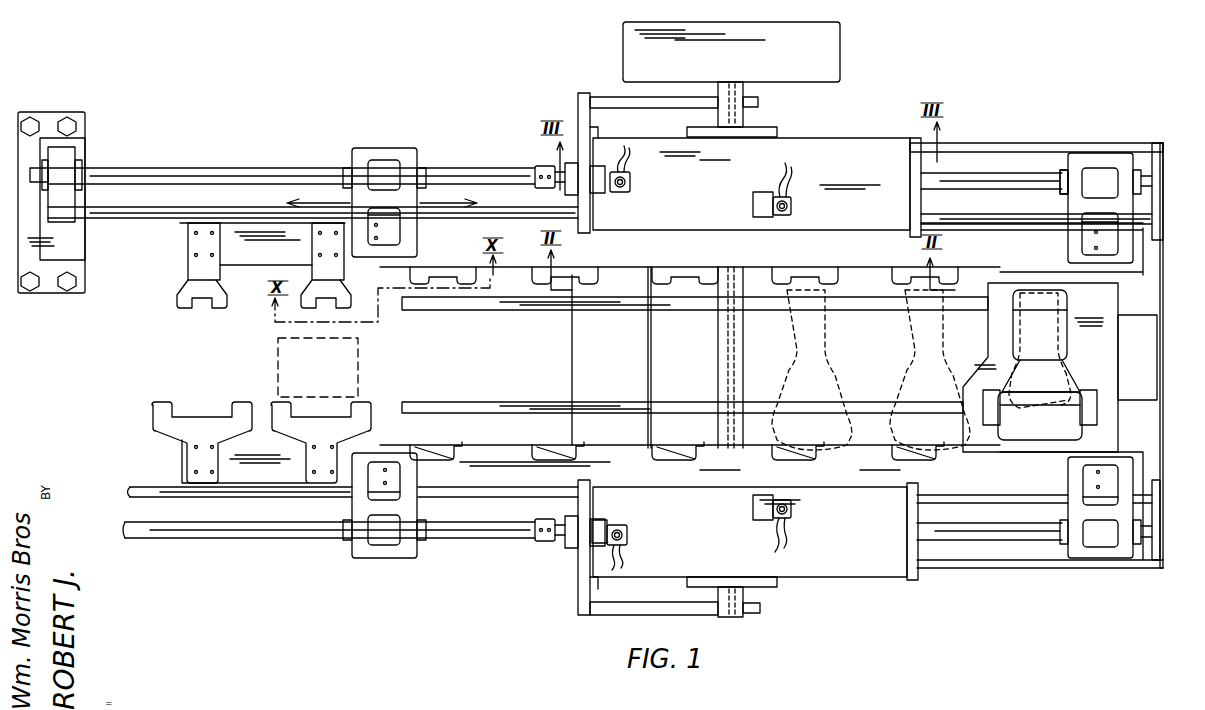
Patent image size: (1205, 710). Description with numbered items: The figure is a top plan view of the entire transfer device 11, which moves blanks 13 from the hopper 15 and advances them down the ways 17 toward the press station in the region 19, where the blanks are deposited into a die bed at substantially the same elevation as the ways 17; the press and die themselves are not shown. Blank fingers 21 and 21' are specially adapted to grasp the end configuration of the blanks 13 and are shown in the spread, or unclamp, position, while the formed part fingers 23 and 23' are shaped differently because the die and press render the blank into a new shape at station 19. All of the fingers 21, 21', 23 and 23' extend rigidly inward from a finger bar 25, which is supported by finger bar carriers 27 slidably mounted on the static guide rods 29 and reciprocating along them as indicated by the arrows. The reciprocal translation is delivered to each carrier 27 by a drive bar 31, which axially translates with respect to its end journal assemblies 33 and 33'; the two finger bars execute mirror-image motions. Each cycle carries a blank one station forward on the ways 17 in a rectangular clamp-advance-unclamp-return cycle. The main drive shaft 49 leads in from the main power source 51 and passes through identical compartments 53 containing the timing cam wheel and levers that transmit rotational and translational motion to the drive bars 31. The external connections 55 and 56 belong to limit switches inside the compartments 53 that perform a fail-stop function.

The transfer device 11 is at (1173, 367).
The blanks 13 is at (827, 338).
The hopper 15 is at (1060, 367).
The ways 17 is at (698, 313).
The press station 19 is at (318, 367).
The blank finger 21 is at (684, 281).
The blank finger 21' is at (677, 442).
The formed part finger 23 is at (253, 279).
The formed part finger 23' is at (261, 431).
The finger bar 25 is at (690, 360).
The finger bar carrier 27 is at (406, 153).
The static guide rod 29 is at (150, 218).
The drive bar 31 is at (175, 175).
The end journal assembly 33 is at (58, 188).
The end journal assembly 33' is at (1171, 339).
The main drive shaft 49 is at (743, 108).
The main power source 51 is at (820, 48).
The compartment 53 is at (749, 354).
The limit switch external connection 55 is at (624, 185).
The limit switch external connection 56 is at (791, 205).